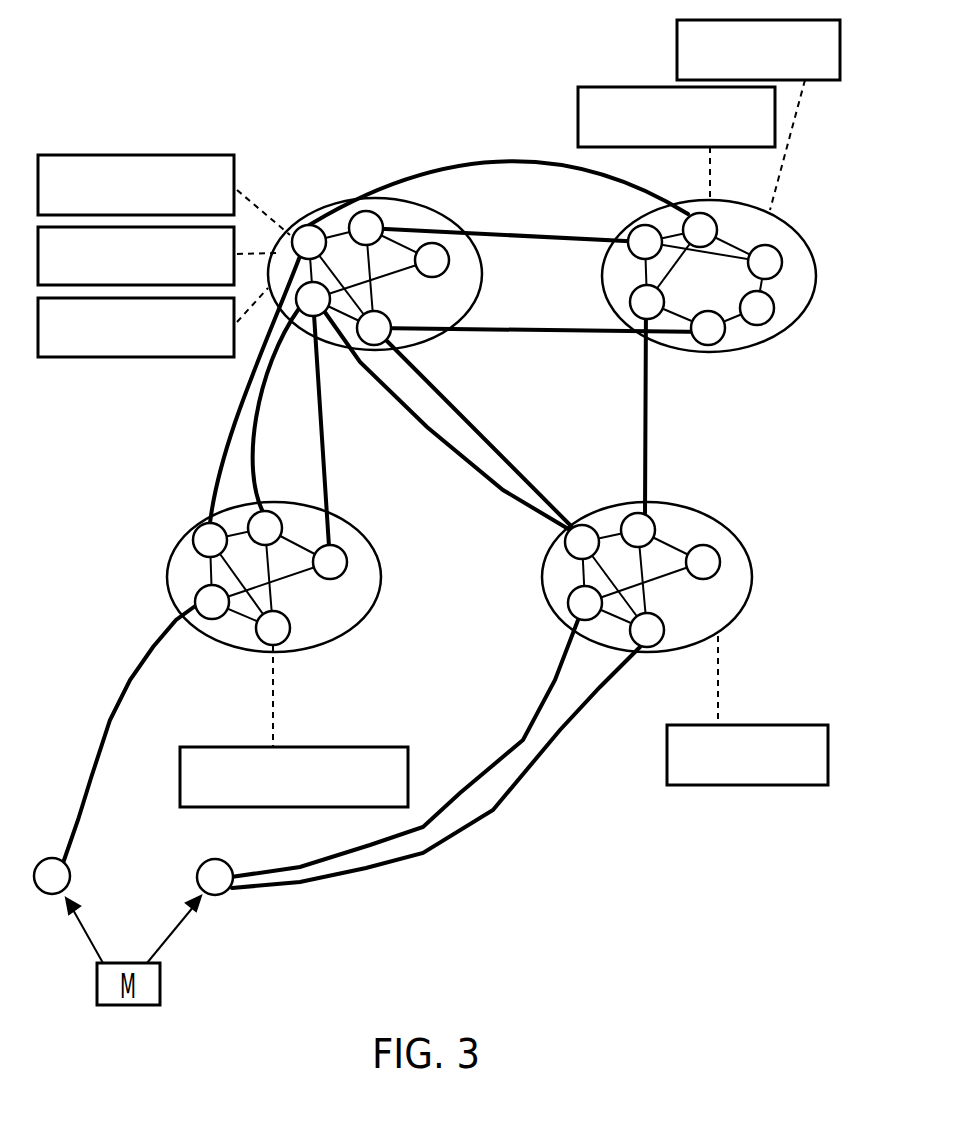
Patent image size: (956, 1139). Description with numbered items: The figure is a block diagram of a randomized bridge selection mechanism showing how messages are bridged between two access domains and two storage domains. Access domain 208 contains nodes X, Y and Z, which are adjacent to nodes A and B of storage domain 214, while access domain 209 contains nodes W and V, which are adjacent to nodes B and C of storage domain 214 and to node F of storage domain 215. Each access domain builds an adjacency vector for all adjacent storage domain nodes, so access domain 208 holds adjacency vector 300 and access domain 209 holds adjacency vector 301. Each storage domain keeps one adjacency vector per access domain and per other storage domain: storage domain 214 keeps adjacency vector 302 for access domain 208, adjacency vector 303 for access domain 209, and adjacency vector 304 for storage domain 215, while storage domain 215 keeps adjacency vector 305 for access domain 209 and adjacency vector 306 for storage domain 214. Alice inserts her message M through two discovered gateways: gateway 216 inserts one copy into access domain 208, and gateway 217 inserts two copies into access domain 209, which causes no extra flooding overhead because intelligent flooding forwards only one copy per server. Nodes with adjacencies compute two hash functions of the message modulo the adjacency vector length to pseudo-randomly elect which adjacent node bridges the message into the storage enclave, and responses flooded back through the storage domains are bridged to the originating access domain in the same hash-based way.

The access domain 208 is at (232, 652).
The access domain 209 is at (542, 596).
The storage domain 214 is at (330, 205).
The storage domain 215 is at (718, 350).
The gateway 216 is at (53, 893).
The gateway 217 is at (197, 879).
The adjacency vector 300 is at (180, 770).
The adjacency vector 301 is at (667, 753).
The adjacency vector 302 is at (177, 153).
The adjacency vector 303 is at (236, 222).
The adjacency vector 304 is at (162, 359).
The adjacency vector 305 is at (677, 60).
The adjacency vector 306 is at (578, 112).